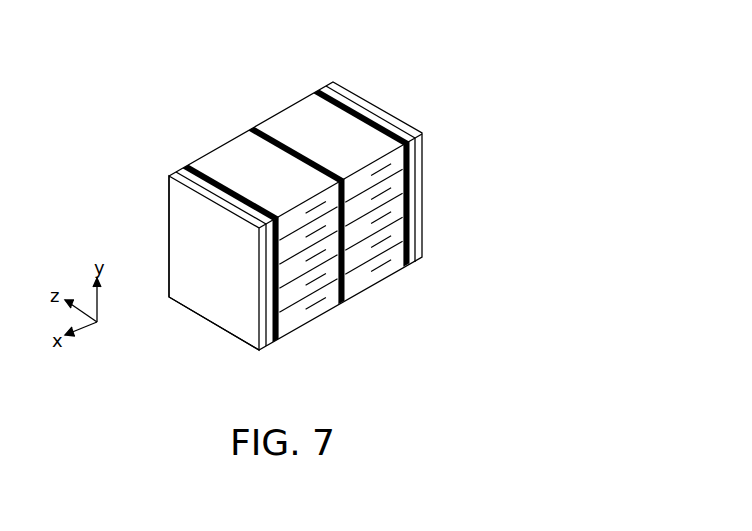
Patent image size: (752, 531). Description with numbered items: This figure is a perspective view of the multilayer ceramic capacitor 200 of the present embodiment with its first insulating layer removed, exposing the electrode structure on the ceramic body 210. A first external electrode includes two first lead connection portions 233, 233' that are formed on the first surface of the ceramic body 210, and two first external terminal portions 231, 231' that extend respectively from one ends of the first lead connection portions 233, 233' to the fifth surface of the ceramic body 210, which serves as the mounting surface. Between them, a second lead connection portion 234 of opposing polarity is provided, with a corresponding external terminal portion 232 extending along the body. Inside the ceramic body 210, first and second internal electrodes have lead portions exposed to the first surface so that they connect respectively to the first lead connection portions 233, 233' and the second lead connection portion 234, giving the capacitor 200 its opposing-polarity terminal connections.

The multilayer ceramic capacitor 200 is at (141, 101).
The ceramic body 210 is at (170, 224).
The first external terminal portion 231 is at (231, 155).
The second band electrode (top) 232 is at (262, 130).
The first external terminal portion 231' is at (360, 78).
The first lead connection portion 233 is at (322, 298).
The second lead connection portion 234 is at (347, 262).
The first lead connection portion 233' is at (460, 204).